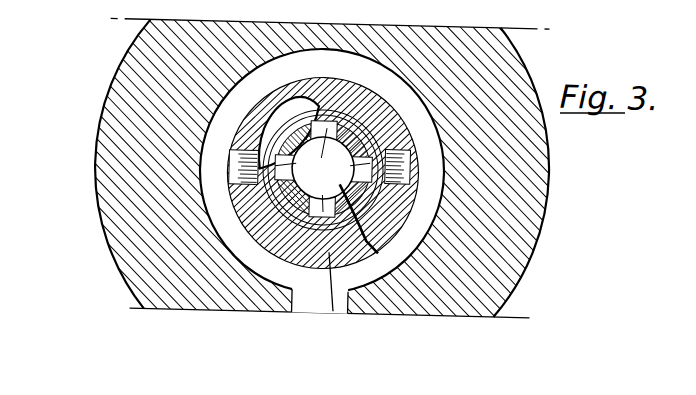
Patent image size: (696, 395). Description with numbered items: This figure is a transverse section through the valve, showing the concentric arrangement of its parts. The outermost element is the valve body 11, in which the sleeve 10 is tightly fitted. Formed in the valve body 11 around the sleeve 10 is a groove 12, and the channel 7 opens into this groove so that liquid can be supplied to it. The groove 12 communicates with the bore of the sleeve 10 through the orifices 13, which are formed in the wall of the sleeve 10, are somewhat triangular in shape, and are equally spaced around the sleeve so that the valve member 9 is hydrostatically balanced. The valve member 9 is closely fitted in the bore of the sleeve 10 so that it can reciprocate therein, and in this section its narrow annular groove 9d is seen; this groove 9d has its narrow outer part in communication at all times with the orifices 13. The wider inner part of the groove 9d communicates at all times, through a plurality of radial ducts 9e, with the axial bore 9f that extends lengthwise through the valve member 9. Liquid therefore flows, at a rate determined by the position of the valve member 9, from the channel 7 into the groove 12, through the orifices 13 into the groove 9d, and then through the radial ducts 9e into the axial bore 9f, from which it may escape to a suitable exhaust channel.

The valve body 11 is at (122, 233).
The groove 12 is at (278, 263).
The orifices 13 is at (238, 175).
The valve member 9 is at (322, 168).
The annular groove 9d is at (290, 111).
The radial ducts 9e is at (322, 170).
The axial bore 9f is at (376, 248).
The channel 7 is at (310, 303).
The sleeve 10 is at (336, 311).